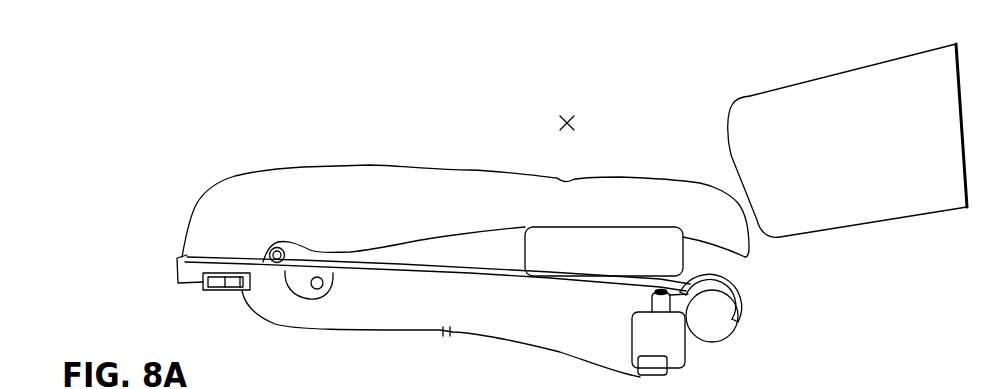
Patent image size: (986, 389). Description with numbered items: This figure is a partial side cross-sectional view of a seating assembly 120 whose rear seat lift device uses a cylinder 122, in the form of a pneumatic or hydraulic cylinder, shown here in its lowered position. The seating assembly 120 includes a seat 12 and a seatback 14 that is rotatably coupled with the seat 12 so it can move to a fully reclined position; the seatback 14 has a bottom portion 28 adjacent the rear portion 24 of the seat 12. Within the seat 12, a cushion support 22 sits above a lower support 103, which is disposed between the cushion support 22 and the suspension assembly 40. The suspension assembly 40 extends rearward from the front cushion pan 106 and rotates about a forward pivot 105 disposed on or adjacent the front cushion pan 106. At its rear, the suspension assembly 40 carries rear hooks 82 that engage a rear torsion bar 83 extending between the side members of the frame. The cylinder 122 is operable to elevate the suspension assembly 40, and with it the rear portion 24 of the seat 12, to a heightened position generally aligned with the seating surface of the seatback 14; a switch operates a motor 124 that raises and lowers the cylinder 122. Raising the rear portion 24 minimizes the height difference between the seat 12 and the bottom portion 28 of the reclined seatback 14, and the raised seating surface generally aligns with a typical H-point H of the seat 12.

The seating assembly 120 is at (238, 110).
The seat 12 is at (400, 165).
The cushion support 22 is at (371, 214).
The rear portion 24 is at (703, 182).
The lower support 103 is at (600, 264).
The suspension assembly 40 is at (405, 275).
The front cushion pan 106 is at (258, 276).
The forward pivot 105 is at (278, 263).
The rear hooks 82 is at (733, 280).
The rear torsion bar 83 is at (720, 325).
The cylinder 122 is at (741, 311).
The motor 124 is at (672, 348).
The seatback 14 is at (877, 67).
The bottom portion 28 is at (746, 97).
The H-point H is at (576, 123).